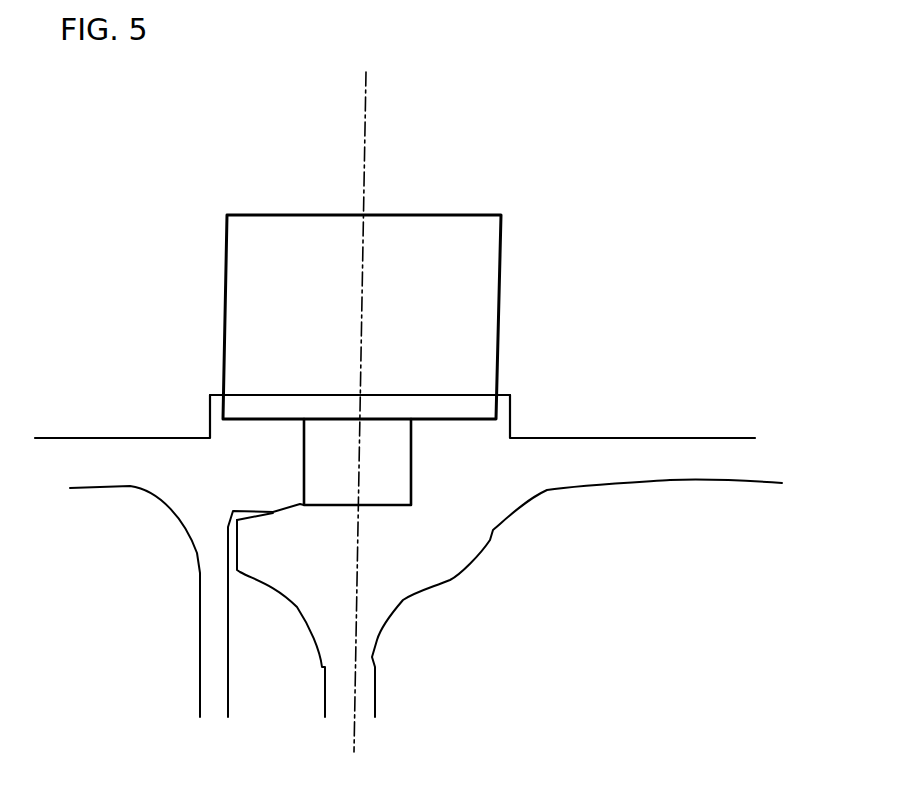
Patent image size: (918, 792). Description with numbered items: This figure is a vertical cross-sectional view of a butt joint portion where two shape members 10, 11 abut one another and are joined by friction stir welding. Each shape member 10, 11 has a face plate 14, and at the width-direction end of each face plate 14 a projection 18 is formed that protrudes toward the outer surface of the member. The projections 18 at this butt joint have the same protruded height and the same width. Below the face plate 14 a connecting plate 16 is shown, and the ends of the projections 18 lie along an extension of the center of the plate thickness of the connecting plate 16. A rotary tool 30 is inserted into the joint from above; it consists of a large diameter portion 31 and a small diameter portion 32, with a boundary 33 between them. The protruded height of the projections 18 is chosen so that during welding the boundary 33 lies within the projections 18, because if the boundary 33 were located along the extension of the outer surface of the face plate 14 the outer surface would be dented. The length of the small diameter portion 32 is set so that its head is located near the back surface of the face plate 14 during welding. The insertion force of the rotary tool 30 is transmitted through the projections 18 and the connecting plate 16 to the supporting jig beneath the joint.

The shape member 10 is at (737, 424).
The shape member 11 is at (115, 426).
The face plate 14 is at (108, 467).
The connecting plate 16 is at (375, 687).
The projection 18 is at (268, 407).
The rotary tool 30 is at (443, 189).
The large diameter portion 31 is at (482, 253).
The small diameter portion 32 is at (417, 458).
The boundary 33 is at (448, 413).